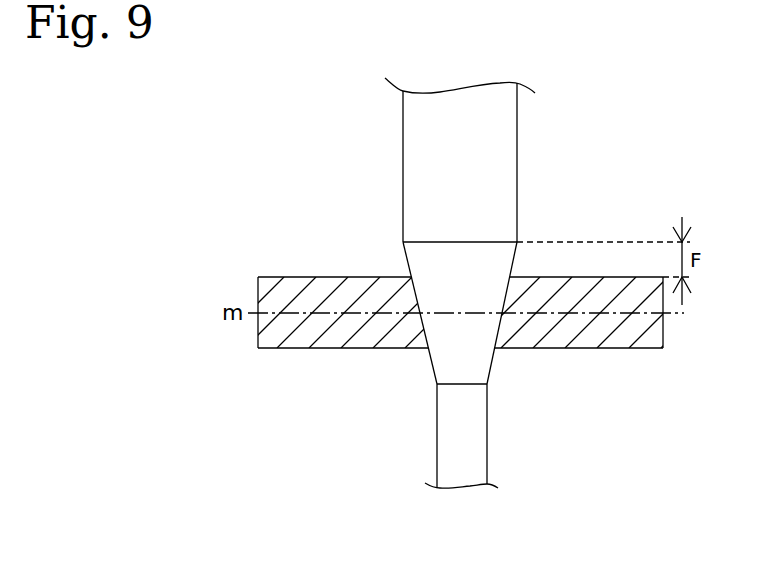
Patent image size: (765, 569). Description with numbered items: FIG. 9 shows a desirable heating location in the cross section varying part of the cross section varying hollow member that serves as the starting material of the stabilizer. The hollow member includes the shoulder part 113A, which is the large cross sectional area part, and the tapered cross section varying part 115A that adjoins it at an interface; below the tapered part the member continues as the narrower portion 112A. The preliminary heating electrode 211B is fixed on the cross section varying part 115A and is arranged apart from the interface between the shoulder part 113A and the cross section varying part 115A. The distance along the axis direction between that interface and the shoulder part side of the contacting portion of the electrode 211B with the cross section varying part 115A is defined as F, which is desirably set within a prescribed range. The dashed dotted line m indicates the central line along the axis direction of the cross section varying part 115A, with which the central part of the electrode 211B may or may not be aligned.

The shoulder part 113A is at (505, 151).
The cross section varying part 115A is at (512, 265).
The lower shaft portion 112A is at (446, 455).
The preliminary heating electrode 211B is at (258, 291).